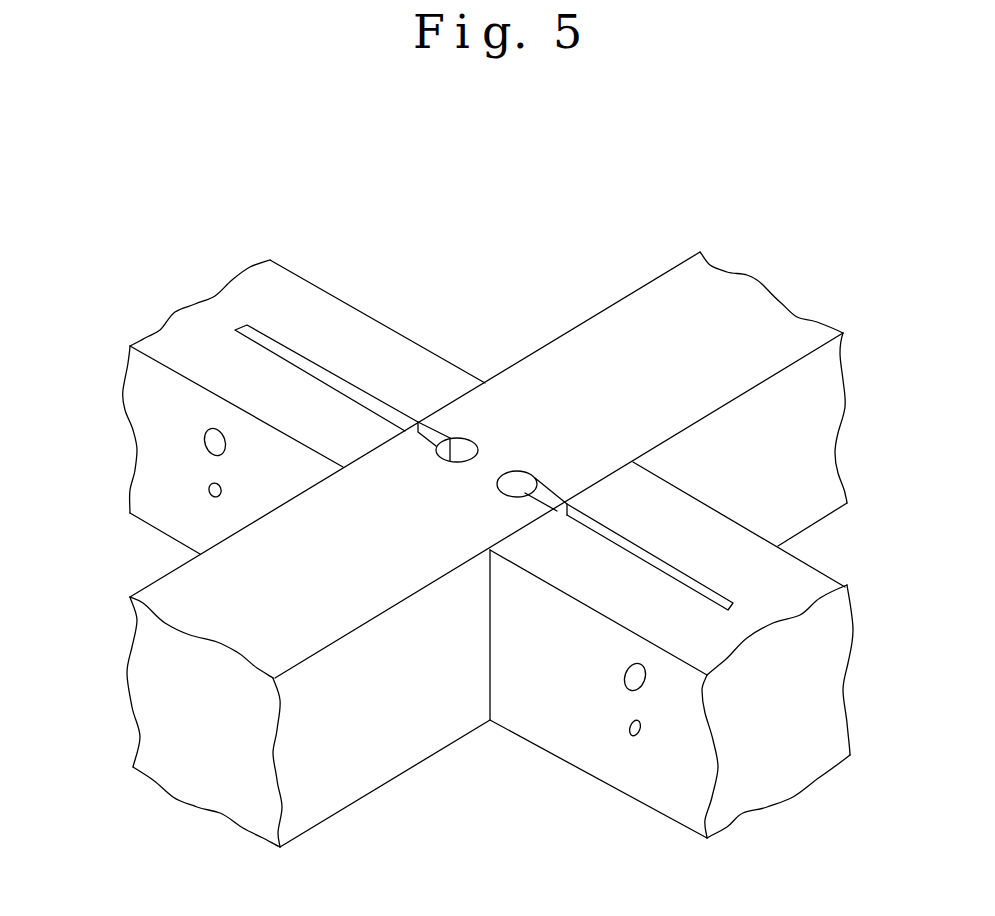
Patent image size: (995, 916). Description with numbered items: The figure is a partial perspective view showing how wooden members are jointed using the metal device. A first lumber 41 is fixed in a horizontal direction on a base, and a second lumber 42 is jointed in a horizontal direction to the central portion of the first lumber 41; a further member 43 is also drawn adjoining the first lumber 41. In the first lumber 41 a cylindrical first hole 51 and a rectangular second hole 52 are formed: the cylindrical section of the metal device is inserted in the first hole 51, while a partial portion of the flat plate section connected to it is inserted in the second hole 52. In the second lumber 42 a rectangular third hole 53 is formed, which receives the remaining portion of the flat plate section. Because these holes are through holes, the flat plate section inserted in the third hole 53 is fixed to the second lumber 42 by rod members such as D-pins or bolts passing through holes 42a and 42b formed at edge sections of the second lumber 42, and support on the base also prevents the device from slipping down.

The first lumber 41 is at (612, 330).
The second lumber 42 is at (192, 333).
The hole 42a is at (205, 442).
The hole 42b is at (208, 488).
The cross beam 43 is at (655, 760).
The first hole 51 is at (465, 438).
The second hole 52 is at (428, 427).
The third hole 53 is at (320, 370).